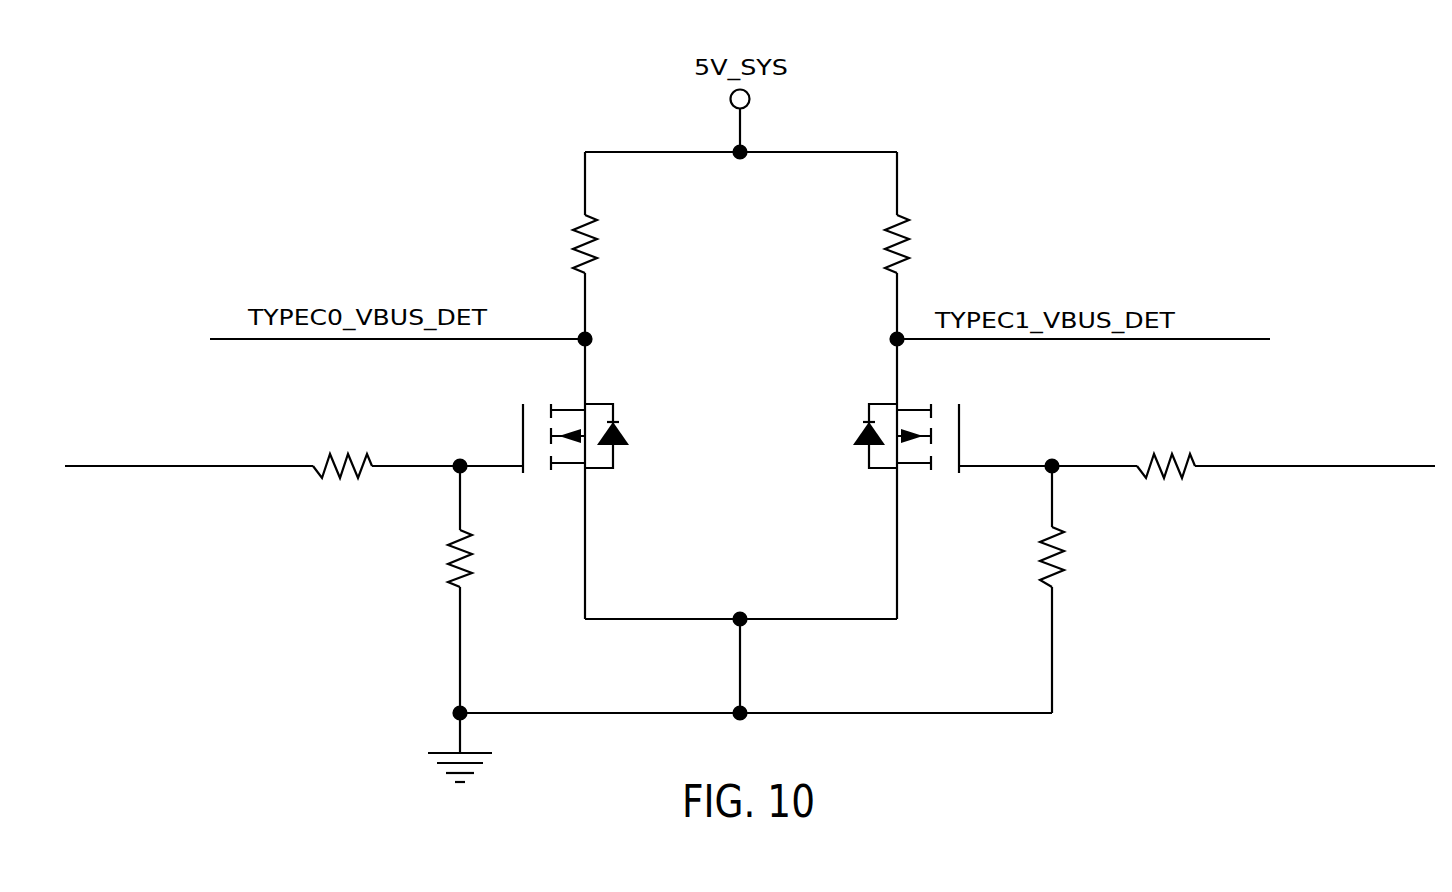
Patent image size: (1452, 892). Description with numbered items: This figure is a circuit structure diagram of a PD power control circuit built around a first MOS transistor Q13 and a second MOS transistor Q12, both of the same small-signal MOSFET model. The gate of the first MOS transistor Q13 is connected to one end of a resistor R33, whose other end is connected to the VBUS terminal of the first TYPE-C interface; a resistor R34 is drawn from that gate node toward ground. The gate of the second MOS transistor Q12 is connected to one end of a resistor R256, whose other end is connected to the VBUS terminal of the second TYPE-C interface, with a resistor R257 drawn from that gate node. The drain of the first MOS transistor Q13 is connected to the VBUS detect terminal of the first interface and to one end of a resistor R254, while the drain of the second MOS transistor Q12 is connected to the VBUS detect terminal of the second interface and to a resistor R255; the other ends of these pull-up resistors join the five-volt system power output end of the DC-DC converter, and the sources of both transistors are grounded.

The resistor R254 is at (618, 245).
The pull-up resistor 100K R255 is at (930, 245).
The resistor R33 is at (266, 453).
The pull-down resistor 12K 1% R34 is at (506, 589).
The resistor R256 is at (1242, 452).
The pull-down resistor 12K 1% R257 is at (1100, 589).
The first MOS transistor Q13 is at (591, 479).
The second MOS transistor Q12 is at (907, 479).